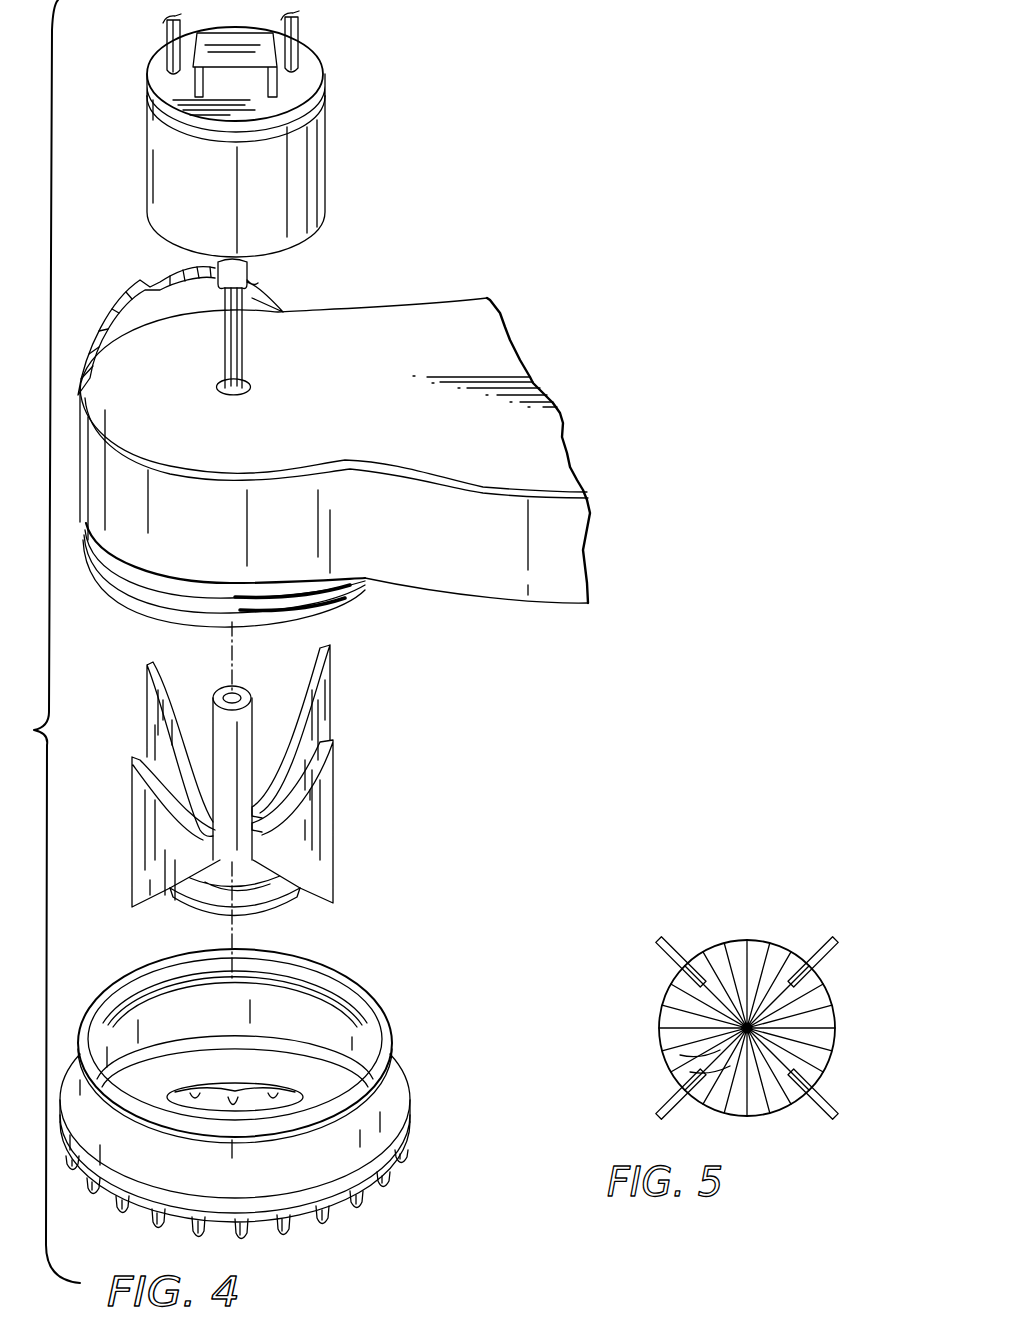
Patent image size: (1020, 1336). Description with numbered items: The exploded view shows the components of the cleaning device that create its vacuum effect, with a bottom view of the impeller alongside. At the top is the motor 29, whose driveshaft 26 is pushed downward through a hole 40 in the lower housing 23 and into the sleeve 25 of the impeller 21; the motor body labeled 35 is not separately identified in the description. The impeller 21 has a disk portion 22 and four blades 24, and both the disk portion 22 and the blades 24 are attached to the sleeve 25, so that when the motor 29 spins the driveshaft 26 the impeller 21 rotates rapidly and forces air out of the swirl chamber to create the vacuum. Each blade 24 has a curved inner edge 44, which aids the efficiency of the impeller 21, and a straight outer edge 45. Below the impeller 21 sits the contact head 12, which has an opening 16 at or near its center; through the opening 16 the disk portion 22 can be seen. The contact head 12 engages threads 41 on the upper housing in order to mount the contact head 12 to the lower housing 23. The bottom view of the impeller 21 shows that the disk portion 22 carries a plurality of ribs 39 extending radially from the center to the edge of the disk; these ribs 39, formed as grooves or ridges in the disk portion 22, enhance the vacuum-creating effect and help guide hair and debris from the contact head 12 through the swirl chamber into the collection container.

In FIG. 4, the contact head 12 is at (272, 1094).
In FIG. 4, the opening 16 is at (295, 1090).
In FIG. 4, the impeller 21 is at (257, 788).
In FIG. 5, the impeller 21 is at (732, 1033).
In FIG. 4, the disk portion 22 is at (275, 900).
In FIG. 5, the disk portion 22 is at (668, 1033).
In FIG. 4, the lower housing 23 is at (334, 462).
In FIG. 4, the blades 24 is at (322, 800).
In FIG. 5, the blades 24 is at (812, 940).
In FIG. 4, the sleeve 25 is at (240, 694).
In FIG. 4, the driveshaft 26 is at (245, 340).
In FIG. 4, the motor 29 is at (302, 75).
In FIG. 4, the motor 35 is at (303, 165).
In FIG. 5, the ribs 39 is at (690, 1072).
In FIG. 4, the hole 40 is at (245, 380).
In FIG. 4, the threads 41 is at (285, 598).
In FIG. 4, the curved inner edge 44 is at (180, 702).
In FIG. 4, the straight outer edge 45 is at (147, 717).